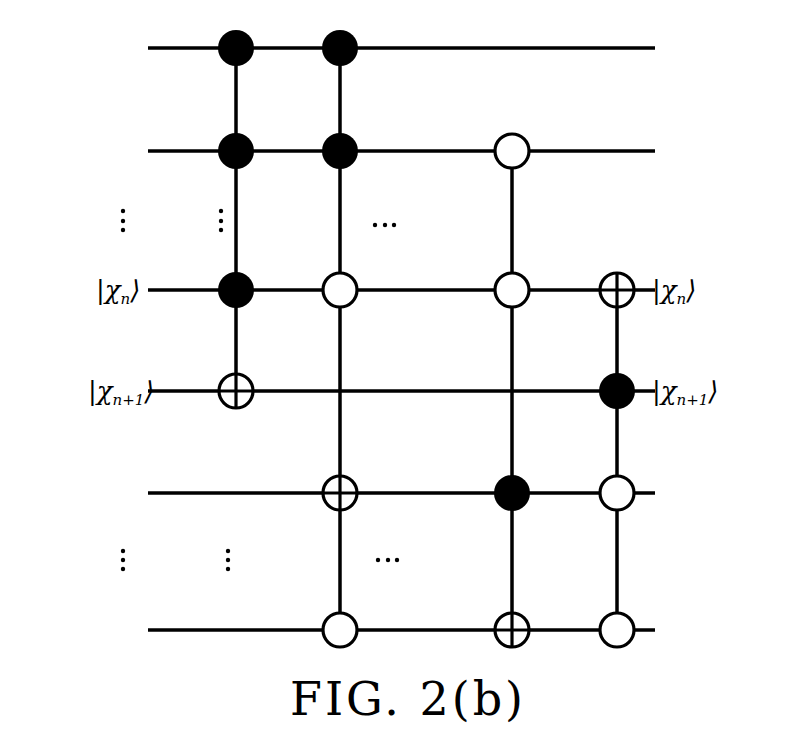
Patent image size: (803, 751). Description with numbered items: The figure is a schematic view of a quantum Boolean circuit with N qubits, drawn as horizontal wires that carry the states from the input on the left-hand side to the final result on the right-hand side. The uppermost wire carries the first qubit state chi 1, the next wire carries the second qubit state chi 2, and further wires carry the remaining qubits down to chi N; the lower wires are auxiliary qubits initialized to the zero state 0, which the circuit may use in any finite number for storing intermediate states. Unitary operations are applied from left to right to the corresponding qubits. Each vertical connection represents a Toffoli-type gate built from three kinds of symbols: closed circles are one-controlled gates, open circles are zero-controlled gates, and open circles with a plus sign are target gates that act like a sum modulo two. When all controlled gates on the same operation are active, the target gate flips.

The first input qubit state chi_ 1 is at (396, 49).
The second input qubit state chi_ 2 is at (396, 152).
The ancilla qubits initialized to state 0 is at (408, 563).